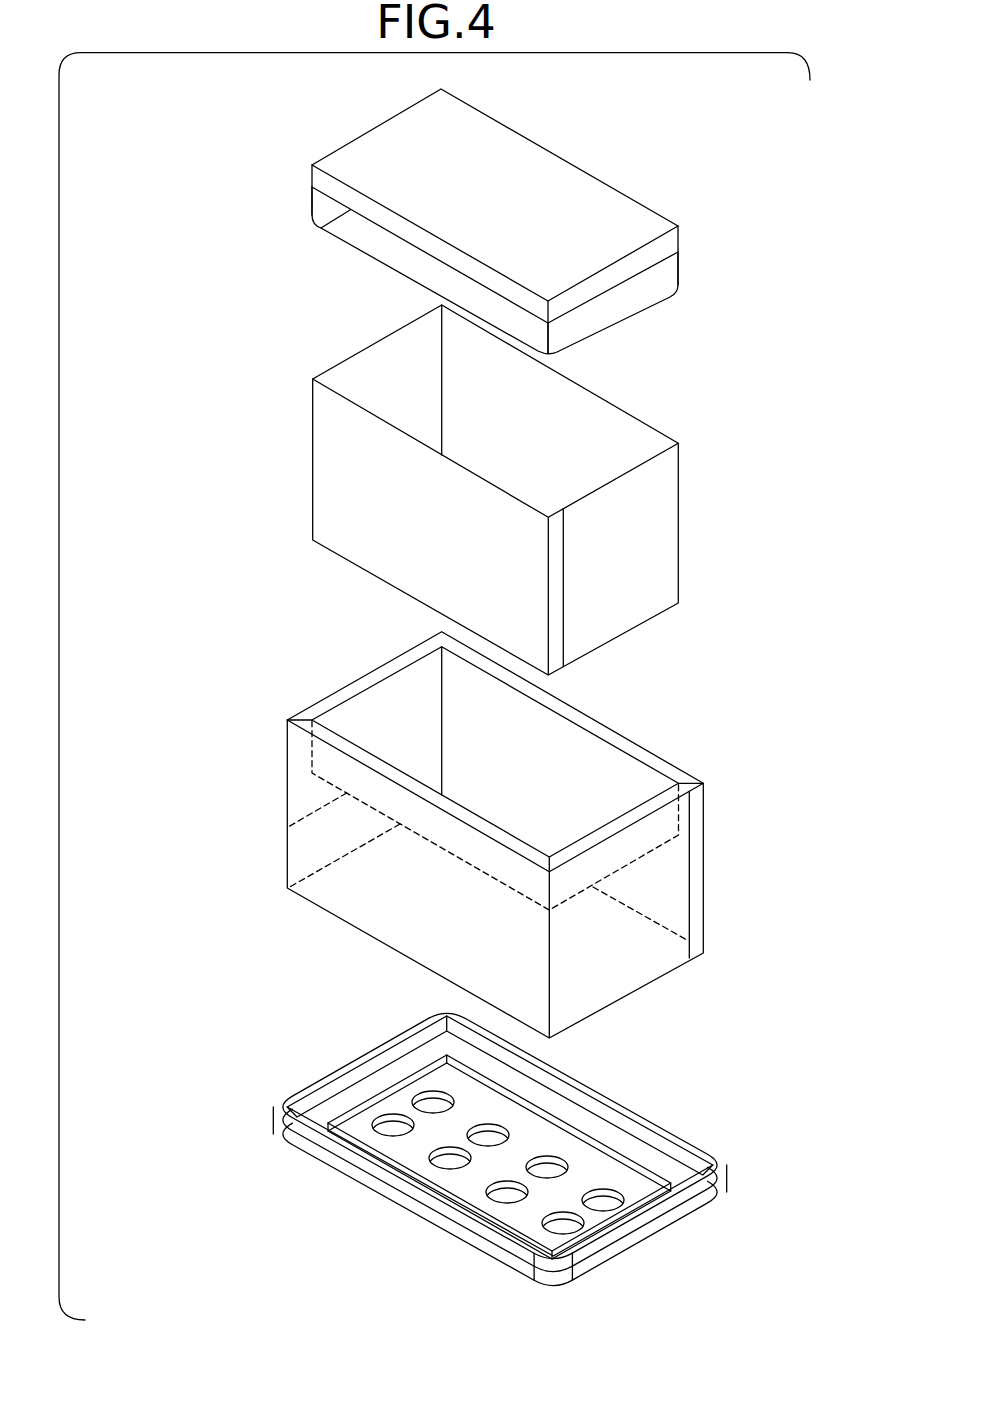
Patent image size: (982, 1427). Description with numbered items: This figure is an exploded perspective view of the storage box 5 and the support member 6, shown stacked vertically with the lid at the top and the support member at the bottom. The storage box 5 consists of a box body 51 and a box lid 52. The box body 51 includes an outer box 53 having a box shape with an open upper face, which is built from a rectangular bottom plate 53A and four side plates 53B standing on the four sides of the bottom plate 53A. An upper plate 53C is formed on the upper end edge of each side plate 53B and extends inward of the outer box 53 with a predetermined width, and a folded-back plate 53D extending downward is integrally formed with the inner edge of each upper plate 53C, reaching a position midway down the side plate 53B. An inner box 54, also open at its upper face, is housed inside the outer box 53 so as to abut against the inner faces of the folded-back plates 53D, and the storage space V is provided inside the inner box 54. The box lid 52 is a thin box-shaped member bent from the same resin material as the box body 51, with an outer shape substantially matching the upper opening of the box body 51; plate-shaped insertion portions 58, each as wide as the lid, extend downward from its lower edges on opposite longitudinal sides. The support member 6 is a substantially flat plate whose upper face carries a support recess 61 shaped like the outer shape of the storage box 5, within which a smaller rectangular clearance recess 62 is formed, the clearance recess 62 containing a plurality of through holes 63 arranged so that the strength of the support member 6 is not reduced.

The storage box 5 is at (148, 350).
The support member 6 is at (258, 1124).
The box body 51 is at (180, 447).
The box lid 52 is at (310, 177).
The outer box 53 is at (263, 786).
The bottom plate 53A is at (628, 960).
The side plate 53B is at (405, 745).
The upper plate 53C is at (370, 680).
The folded-back plate 53D is at (355, 727).
The inner box 54 is at (337, 497).
The insertion portion 58 is at (322, 209).
The support recess 61 is at (343, 1105).
The clearance recess 62 is at (525, 1220).
The through hole 63 is at (432, 1097).
The storage space V is at (569, 441).